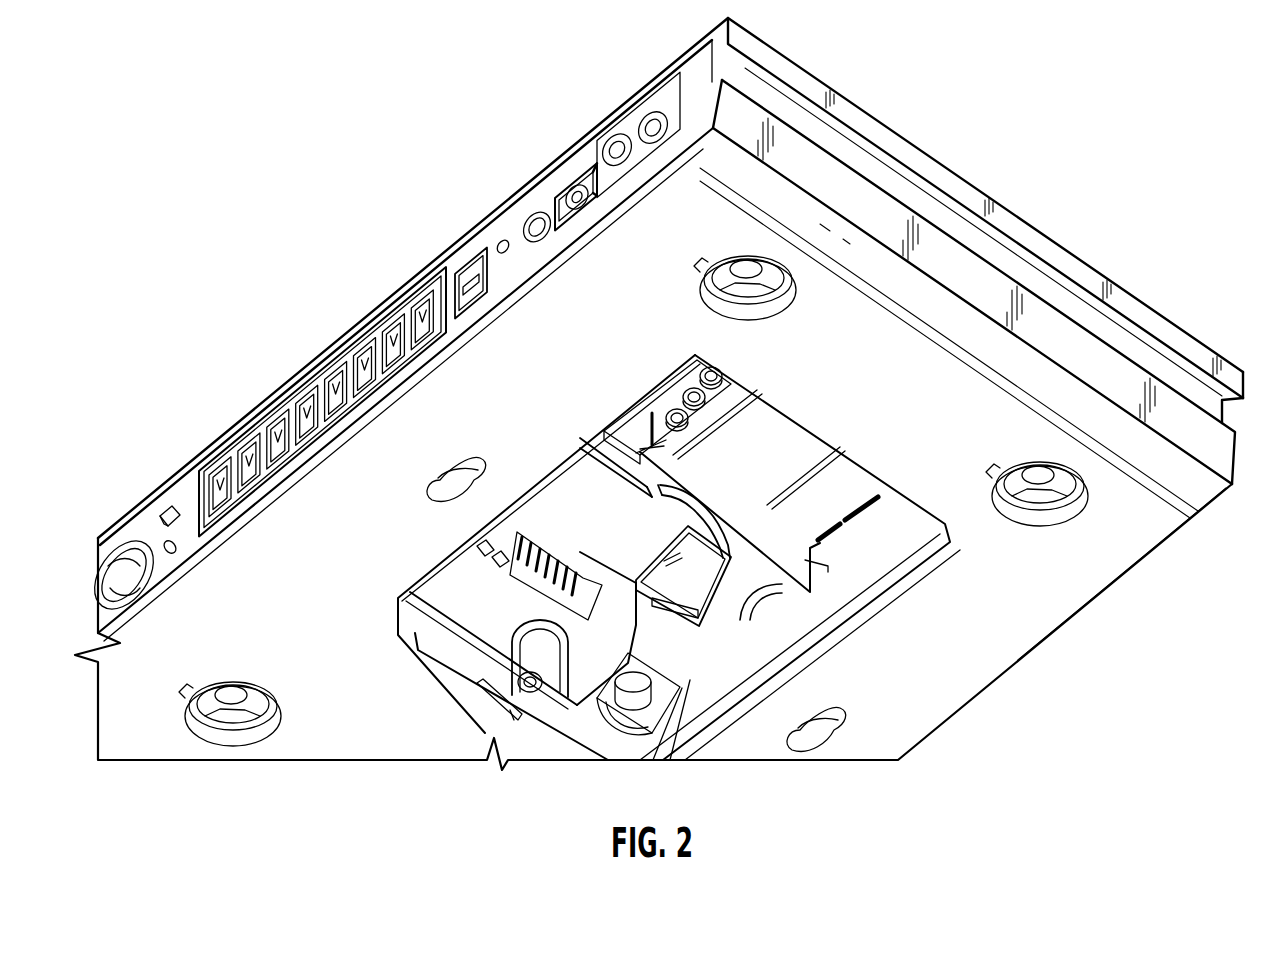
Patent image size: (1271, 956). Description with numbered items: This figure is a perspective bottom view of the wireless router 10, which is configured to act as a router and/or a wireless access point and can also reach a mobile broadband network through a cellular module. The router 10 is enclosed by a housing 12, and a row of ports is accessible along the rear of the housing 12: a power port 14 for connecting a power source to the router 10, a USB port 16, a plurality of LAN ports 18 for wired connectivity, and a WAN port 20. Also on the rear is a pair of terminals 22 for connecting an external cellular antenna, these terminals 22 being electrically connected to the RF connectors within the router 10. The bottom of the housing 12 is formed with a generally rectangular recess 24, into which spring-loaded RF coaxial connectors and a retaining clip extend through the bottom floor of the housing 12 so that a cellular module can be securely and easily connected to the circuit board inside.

The wireless router 10 is at (129, 120).
The housing 12 is at (1122, 526).
The power port 14 is at (560, 192).
The USB port 16 is at (455, 270).
The LAN ports 18 is at (284, 383).
The WAN port 20 is at (214, 443).
The terminals 22 is at (647, 108).
The recess 24 is at (847, 504).